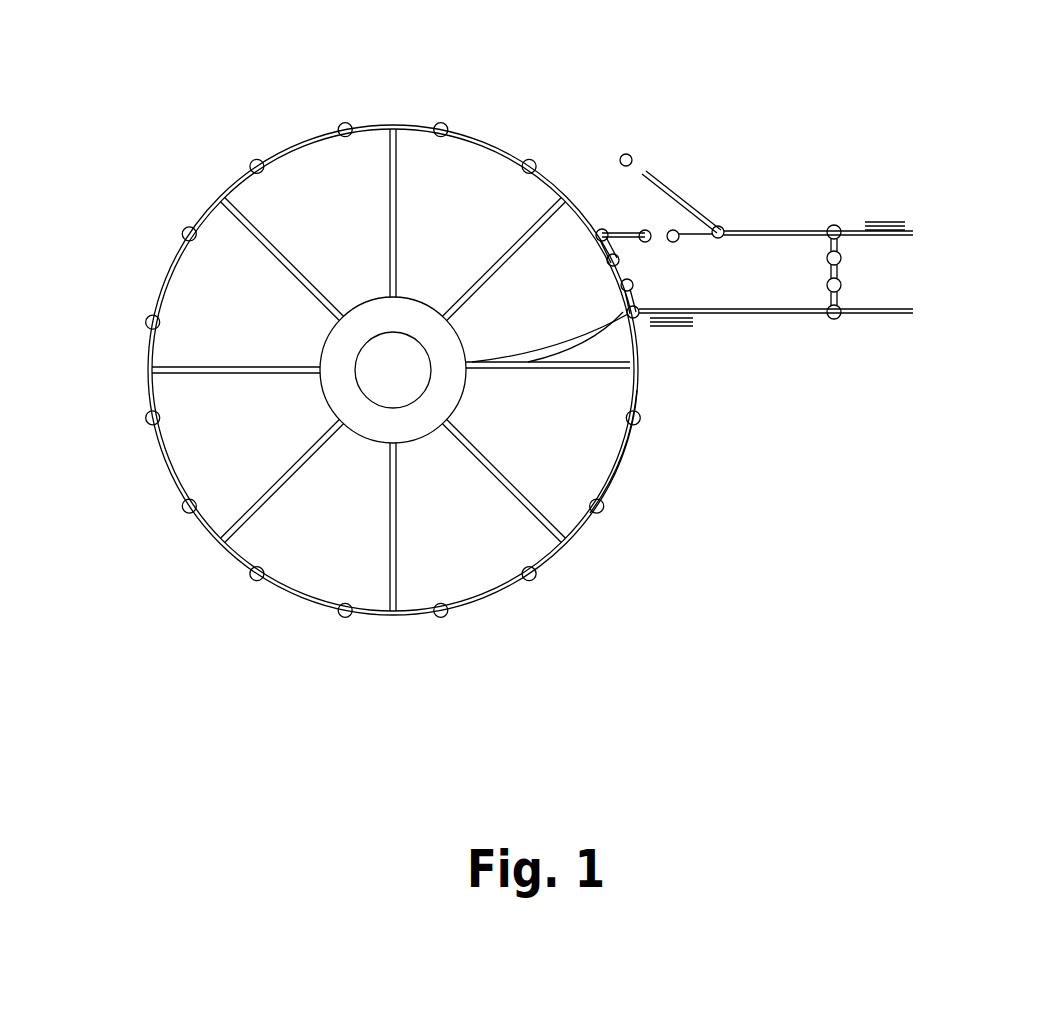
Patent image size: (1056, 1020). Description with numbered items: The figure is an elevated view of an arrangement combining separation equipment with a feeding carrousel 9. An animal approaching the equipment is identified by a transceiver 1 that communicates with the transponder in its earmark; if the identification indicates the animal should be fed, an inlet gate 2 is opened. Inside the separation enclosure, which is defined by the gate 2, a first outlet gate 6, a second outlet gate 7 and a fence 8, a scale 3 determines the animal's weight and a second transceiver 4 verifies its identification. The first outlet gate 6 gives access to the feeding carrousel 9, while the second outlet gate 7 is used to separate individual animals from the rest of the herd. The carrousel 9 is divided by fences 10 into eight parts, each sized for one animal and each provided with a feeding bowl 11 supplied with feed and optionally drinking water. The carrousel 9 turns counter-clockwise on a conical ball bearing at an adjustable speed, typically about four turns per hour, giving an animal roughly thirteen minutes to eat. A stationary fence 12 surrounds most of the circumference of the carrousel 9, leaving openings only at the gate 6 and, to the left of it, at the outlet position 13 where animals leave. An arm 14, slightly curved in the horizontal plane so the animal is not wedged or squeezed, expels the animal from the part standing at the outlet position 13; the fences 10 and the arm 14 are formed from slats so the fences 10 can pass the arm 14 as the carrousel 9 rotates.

The transceiver 1 is at (883, 208).
The inlet gate 2 is at (867, 273).
The scale 3 is at (760, 293).
The second transceiver 4 is at (670, 335).
The first outlet gate 6 is at (618, 255).
The second outlet gate 7 is at (663, 218).
The fence 8 is at (782, 232).
The feeding carrousel 9 is at (450, 98).
The fences 10 is at (388, 157).
The feeding bowl 11 is at (418, 427).
The stationary fence 12 is at (307, 602).
The outlet position 13 is at (627, 472).
The arm 14 is at (600, 332).